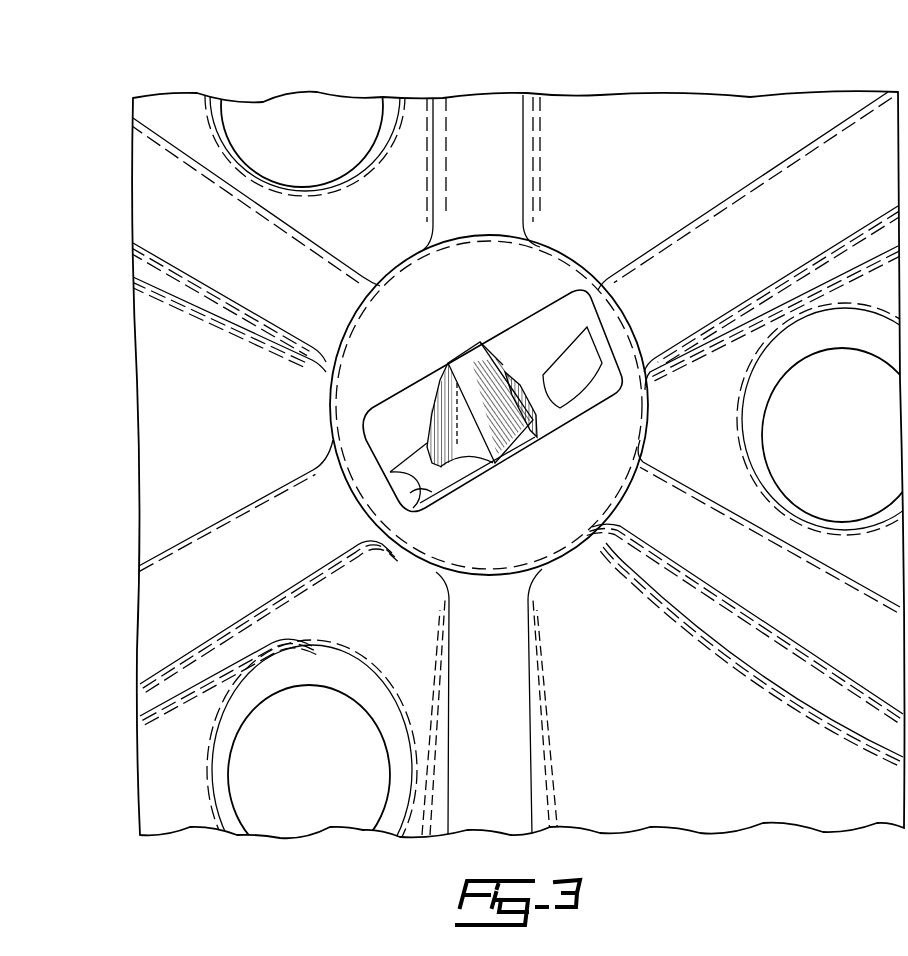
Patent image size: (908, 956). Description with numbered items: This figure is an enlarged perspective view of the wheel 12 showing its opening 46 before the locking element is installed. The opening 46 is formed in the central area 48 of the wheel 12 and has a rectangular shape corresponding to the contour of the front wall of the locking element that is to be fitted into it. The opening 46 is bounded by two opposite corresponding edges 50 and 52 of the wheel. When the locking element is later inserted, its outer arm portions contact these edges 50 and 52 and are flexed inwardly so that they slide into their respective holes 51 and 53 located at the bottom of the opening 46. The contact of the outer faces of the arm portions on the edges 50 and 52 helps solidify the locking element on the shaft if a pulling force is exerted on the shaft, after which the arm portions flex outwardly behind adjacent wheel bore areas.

The wheel 12 is at (744, 142).
The opening 46 is at (533, 322).
The central area 48 is at (432, 303).
The edge 50 is at (598, 332).
The hole 51 is at (582, 372).
The edge 52 is at (403, 507).
The hole 53 is at (420, 486).